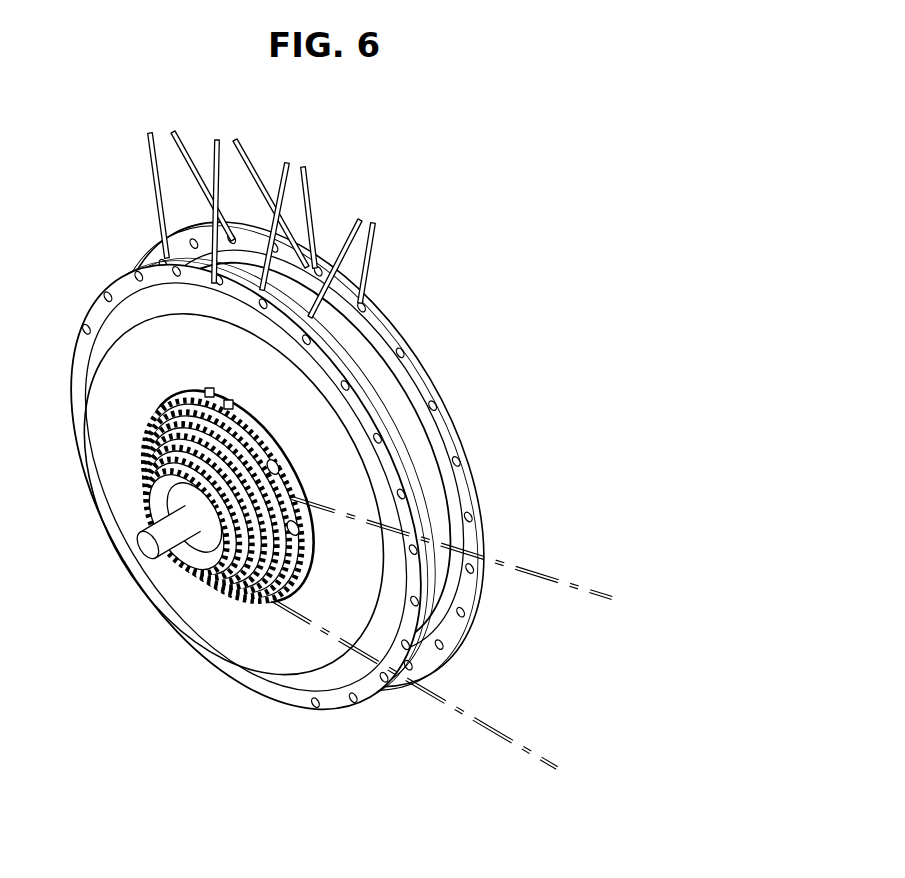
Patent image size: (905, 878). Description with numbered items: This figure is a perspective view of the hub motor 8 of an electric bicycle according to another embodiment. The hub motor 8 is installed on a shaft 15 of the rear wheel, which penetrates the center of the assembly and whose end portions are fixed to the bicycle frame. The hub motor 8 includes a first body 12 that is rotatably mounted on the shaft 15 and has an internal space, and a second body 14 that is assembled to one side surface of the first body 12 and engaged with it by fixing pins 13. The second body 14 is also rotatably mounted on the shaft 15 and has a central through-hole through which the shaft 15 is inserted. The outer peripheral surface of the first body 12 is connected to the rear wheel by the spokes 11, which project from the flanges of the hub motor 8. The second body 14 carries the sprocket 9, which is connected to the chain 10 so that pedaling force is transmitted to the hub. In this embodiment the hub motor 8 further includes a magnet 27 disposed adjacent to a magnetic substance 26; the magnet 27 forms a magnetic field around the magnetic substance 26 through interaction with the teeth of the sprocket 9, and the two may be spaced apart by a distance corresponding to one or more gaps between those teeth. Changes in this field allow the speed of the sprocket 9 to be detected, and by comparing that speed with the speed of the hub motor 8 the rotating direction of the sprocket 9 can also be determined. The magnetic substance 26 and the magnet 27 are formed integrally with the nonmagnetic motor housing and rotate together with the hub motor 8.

The hub motor 8 is at (292, 464).
The sprocket 9 is at (140, 440).
The chain 10 is at (522, 572).
The spokes 11 is at (283, 200).
The first body 12 is at (450, 428).
The fixing pins 13 is at (262, 445).
The second body 14 is at (283, 470).
The shaft 15 is at (143, 545).
The magnetic substance 26 is at (200, 392).
The magnet 27 is at (222, 402).